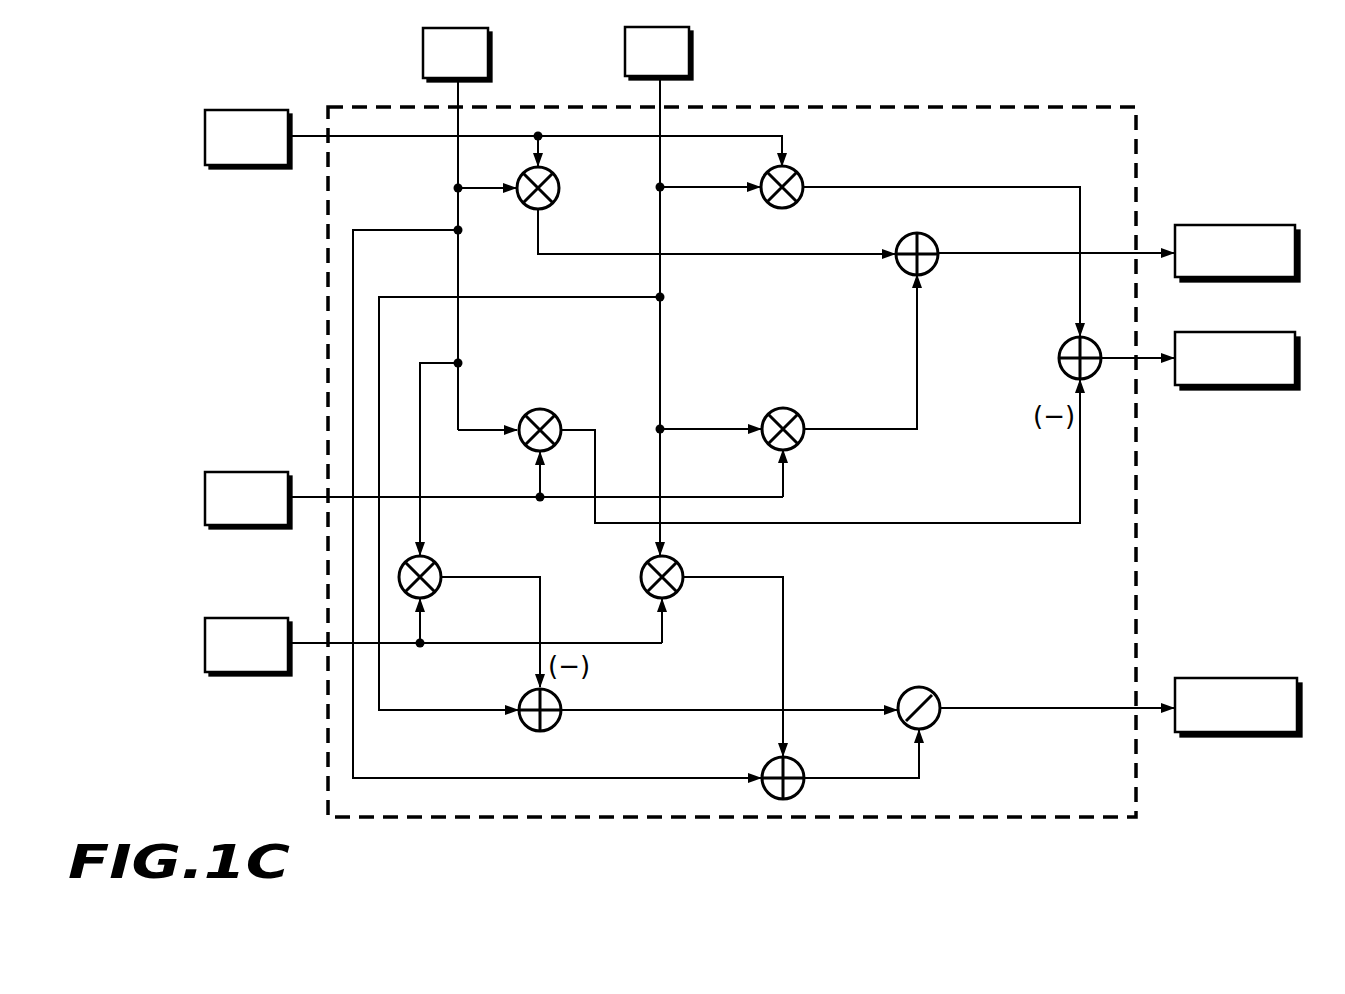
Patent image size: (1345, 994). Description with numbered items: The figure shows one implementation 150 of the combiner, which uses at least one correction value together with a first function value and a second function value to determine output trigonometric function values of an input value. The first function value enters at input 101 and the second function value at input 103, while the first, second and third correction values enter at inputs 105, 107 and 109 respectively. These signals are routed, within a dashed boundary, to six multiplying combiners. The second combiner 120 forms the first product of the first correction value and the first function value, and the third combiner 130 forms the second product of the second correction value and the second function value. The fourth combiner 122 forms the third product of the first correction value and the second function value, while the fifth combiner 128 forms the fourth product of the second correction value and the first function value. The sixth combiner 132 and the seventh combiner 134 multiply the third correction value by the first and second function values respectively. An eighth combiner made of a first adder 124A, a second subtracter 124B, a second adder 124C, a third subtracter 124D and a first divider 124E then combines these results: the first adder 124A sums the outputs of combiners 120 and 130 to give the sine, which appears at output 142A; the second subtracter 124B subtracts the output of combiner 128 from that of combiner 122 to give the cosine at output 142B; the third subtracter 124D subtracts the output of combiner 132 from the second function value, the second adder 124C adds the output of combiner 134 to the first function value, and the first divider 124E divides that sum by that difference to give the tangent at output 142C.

The first frequency input f1 101 is at (495, 54).
The second frequency input f2 103 is at (699, 50).
The control voltage input CV1 105 is at (250, 110).
The control voltage input CV2 107 is at (252, 472).
The control voltage input CV3 109 is at (252, 618).
The second combiner 120 is at (549, 168).
The fourth combiner 122 is at (792, 167).
The first adder 124A is at (927, 236).
The second subtracter 124B is at (1064, 346).
The second adder 124C is at (795, 765).
The third subtracter 124D is at (553, 728).
The first divider 124E is at (930, 688).
The fifth combiner 128 is at (551, 410).
The third combiner 130 is at (794, 408).
The sixth combiner 132 is at (432, 562).
The seventh combiner 134 is at (676, 563).
The sin(x) output 142A is at (1245, 225).
The cos(x) output 142B is at (1245, 332).
The tan(x) output 142C is at (1245, 678).
The combiner implementation 150 is at (214, 828).